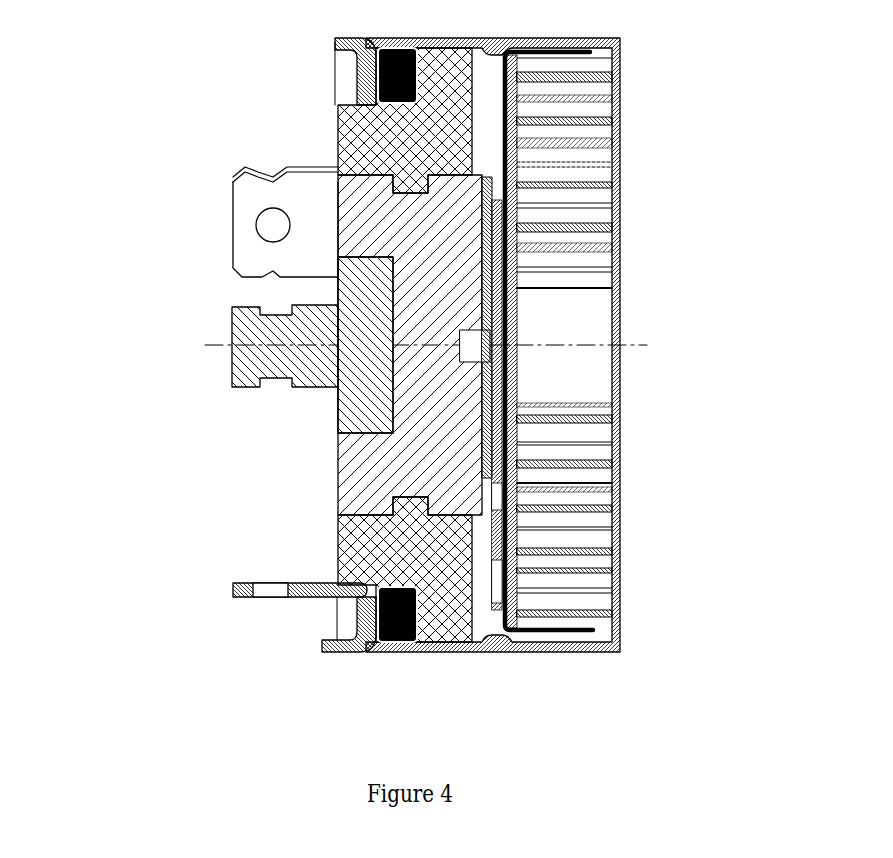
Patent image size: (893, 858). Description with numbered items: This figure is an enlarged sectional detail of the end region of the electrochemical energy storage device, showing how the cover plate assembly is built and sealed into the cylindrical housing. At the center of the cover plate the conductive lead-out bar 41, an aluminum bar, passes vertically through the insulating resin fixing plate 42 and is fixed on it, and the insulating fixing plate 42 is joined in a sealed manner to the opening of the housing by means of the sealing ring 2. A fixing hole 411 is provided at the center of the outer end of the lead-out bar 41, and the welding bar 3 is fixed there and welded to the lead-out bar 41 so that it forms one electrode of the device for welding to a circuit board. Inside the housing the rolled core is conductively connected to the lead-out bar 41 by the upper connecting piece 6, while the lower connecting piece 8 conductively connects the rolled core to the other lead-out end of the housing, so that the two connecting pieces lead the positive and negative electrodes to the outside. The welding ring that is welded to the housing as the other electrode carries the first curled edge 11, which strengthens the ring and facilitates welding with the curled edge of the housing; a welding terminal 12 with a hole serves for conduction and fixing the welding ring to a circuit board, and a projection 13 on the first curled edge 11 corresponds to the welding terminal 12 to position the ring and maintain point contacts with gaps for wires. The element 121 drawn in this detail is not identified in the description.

The sealing ring 2 is at (590, 52).
The upper connecting piece 6 is at (490, 217).
The lower connecting piece 8 is at (343, 172).
The first curled edge 11 is at (335, 42).
The welding terminal 12 is at (297, 595).
The projection 13 is at (322, 648).
The mounting block with hole 121 is at (253, 217).
The welding bar 3 is at (245, 328).
The lead-out bar 41 is at (433, 427).
The fixing hole 411 is at (392, 392).
The fixing plate 42 is at (404, 547).